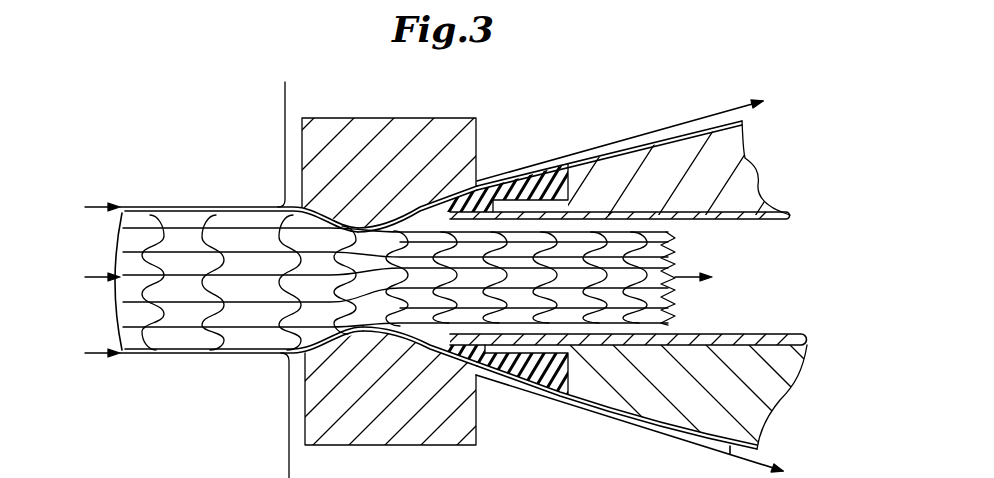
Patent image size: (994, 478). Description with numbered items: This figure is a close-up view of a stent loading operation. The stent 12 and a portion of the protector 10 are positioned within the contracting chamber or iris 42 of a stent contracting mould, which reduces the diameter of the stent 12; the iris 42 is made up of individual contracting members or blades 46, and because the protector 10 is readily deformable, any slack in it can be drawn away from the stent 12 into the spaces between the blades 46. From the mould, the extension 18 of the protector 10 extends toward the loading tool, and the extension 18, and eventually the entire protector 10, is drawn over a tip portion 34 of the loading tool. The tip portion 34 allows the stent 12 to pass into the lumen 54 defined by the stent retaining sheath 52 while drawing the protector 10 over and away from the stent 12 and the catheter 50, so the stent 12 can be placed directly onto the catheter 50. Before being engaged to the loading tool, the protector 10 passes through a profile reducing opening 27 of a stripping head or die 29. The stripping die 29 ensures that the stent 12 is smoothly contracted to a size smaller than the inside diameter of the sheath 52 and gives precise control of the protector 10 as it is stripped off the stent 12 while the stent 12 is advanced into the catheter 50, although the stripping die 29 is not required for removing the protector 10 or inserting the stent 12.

The protector 10 is at (418, 208).
The stent 12 is at (190, 250).
The extension 18 is at (660, 128).
The profile reducing opening 27 is at (447, 357).
The stripping die 29 is at (347, 382).
The tip portion 34 is at (545, 178).
The contracting chamber or iris 42 is at (242, 207).
The contracting members or blades 46 is at (260, 124).
The catheter 50 is at (752, 208).
The stent retaining sheath 52 is at (633, 345).
The lumen 54 is at (750, 243).